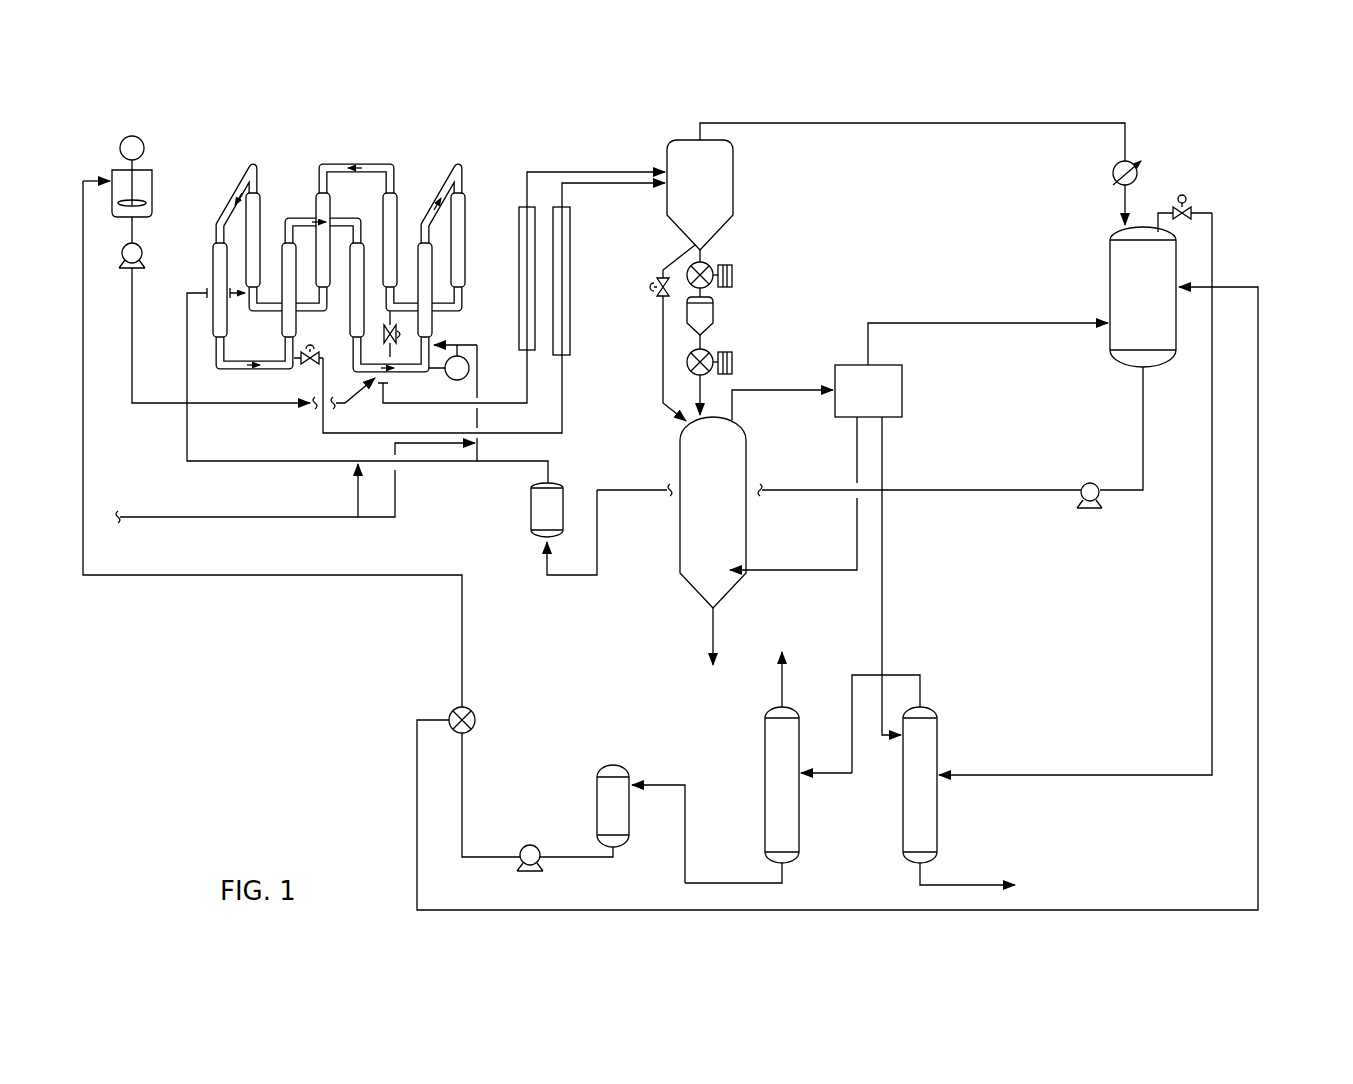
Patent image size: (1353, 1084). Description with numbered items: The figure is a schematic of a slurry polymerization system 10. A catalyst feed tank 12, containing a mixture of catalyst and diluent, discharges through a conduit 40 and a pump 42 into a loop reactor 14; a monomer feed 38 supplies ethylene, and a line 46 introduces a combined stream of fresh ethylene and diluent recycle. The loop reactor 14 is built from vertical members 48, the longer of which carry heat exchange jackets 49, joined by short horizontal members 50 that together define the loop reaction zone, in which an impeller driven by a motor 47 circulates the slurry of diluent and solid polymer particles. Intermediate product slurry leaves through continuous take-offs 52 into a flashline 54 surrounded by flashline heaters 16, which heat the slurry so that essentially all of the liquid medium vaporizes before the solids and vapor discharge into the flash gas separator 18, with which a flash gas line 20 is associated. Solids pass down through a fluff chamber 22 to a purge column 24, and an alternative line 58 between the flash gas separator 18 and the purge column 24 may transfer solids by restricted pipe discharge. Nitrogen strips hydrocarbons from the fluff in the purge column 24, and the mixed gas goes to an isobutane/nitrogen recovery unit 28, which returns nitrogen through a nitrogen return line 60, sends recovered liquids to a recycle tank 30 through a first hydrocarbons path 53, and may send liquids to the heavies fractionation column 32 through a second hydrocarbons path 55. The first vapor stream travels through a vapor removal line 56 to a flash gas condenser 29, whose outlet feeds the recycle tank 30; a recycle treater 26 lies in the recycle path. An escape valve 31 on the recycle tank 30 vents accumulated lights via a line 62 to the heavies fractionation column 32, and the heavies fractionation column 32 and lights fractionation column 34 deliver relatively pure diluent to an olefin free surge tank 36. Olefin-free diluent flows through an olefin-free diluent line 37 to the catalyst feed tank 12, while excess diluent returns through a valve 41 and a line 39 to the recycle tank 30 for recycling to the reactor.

The slurry polymerization system 10 is at (1267, 105).
The catalyst feed tank 12 is at (115, 172).
The loop reactor 14 is at (352, 165).
The flashline heater 16 is at (519, 342).
The flash gas separator 18 is at (667, 146).
The flash gas line 20 is at (393, 405).
The fluff chamber 22 is at (714, 325).
The purge column 24 is at (680, 462).
The recycle treater 26 is at (530, 500).
The isobutane/nitrogen recovery unit 28 is at (904, 395).
The flash gas condenser 29 is at (1146, 182).
The recycle tank 30 is at (1108, 300).
The escape valve 31 is at (1195, 206).
The heavies fractionation column 32 is at (938, 842).
The lights fractionation column 34 is at (800, 845).
The olefin free surge tank 36 is at (612, 765).
The olefin-free diluent line 37 is at (461, 640).
The monomer feed 38 is at (122, 520).
The line 39 is at (1259, 590).
The conduit 40 is at (134, 230).
The valve 41 is at (474, 712).
The pump 42 is at (137, 270).
The line 46 is at (255, 463).
The motor 47 is at (449, 378).
The vertical members 48 is at (258, 168).
The heat exchange jackets 49 is at (466, 200).
The horizontal members 50 is at (243, 178).
The continuous take-offs 52 is at (300, 366).
The first hydrocarbons path 53 is at (940, 323).
The flashline 54 is at (330, 436).
The second hydrocarbons path 55 is at (884, 452).
The vapor removal line 56 is at (721, 122).
The line 58 is at (662, 345).
The nitrogen return line 60 is at (855, 538).
The line 62 is at (1210, 545).